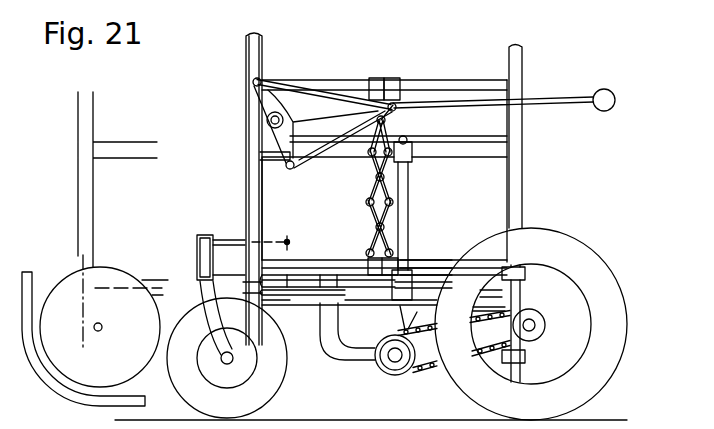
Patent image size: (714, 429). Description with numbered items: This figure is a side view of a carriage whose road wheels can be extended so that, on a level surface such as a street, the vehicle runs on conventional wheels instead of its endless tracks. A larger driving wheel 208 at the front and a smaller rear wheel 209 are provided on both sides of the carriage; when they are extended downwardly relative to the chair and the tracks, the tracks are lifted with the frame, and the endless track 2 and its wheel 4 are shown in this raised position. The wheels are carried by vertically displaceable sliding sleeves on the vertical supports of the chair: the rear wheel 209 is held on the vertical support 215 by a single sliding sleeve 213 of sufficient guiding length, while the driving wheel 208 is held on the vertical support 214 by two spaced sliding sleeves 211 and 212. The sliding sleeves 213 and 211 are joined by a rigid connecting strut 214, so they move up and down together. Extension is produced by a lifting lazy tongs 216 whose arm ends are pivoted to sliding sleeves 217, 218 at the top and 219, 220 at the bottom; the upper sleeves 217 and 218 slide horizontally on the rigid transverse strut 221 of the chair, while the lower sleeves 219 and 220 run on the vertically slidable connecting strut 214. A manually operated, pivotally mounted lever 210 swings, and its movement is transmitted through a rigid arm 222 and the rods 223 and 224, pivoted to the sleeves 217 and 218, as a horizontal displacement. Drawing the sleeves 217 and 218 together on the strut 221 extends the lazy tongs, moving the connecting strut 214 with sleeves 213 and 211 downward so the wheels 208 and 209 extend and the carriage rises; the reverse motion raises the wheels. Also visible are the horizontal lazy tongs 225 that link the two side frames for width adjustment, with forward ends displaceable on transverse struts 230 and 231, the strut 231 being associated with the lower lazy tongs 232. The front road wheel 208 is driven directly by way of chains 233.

The endless track 2 is at (48, 372).
The wheel 4 is at (117, 373).
The driving wheel 208 is at (595, 384).
The rear wheel 209 is at (270, 387).
The lever 210 is at (537, 77).
The sliding sleeve 211 is at (521, 267).
The sliding sleeve 212 is at (513, 355).
The sliding sleeve 213 is at (248, 243).
The vertical support 214 is at (305, 268).
The vertical support 215 is at (252, 188).
The lifting lazy tongs 216 is at (395, 193).
The sliding sleeve 217 is at (369, 74).
The sliding sleeve 218 is at (398, 82).
The sliding sleeve 219 is at (370, 265).
The sliding sleeve 220 is at (390, 272).
The transverse strut 221 is at (467, 93).
The rigid arm 222 is at (265, 103).
The rod 223 is at (278, 80).
The rod 224 is at (320, 148).
The horizontal lazy tongs 225 is at (398, 137).
The transverse strut 230 is at (455, 151).
The transverse strut 231 is at (297, 296).
The lower lazy tongs 232 is at (345, 289).
The chain 233 is at (505, 310).